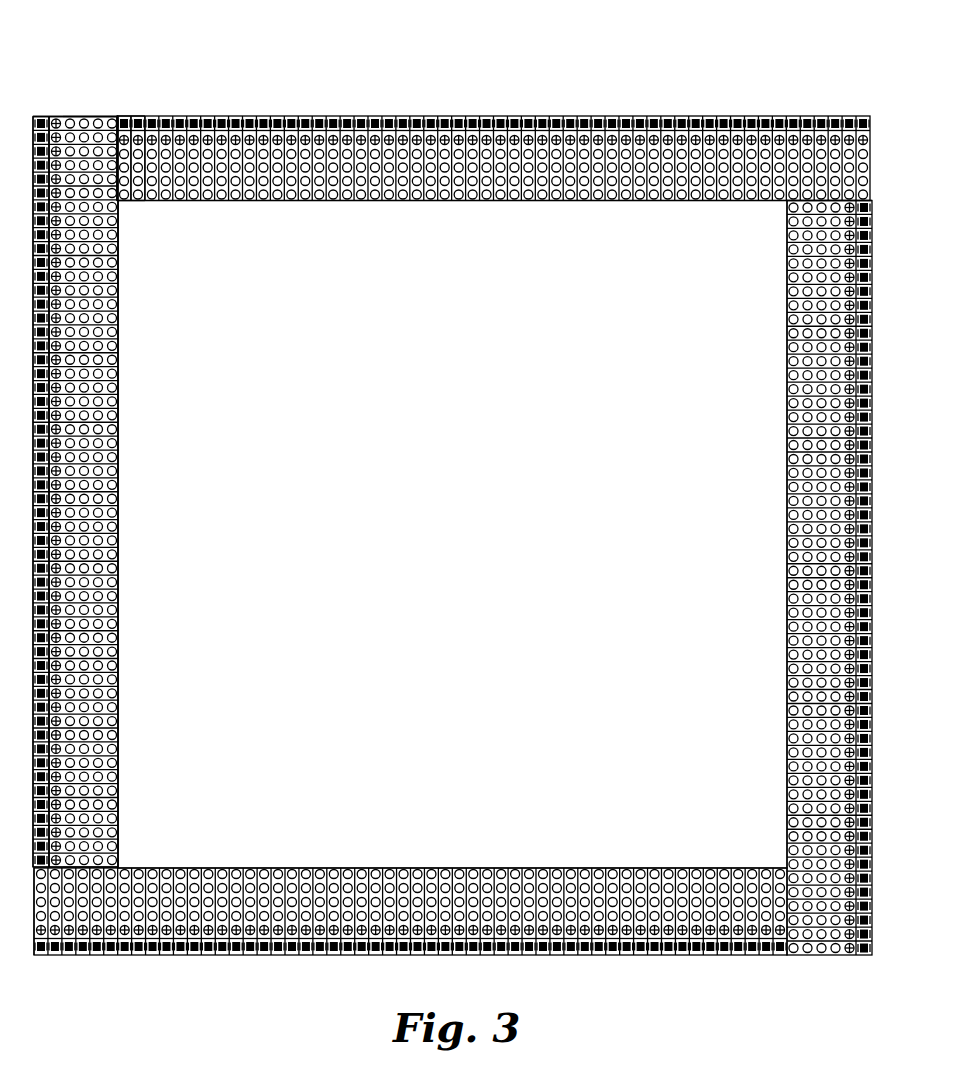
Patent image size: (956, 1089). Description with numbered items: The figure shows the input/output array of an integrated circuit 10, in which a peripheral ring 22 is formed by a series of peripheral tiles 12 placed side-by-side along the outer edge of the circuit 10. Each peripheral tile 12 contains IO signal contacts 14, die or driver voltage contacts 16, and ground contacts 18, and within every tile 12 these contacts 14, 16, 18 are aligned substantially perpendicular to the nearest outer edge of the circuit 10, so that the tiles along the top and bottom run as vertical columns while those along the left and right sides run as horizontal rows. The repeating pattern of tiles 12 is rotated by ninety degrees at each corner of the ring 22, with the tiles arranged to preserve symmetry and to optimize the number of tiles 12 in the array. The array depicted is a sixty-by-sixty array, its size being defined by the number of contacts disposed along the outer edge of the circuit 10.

The integrated circuit 10 is at (442, 525).
The peripheral tile 12 is at (126, 104).
The IO signal contacts 14 is at (77, 104).
The die voltage contacts 16 is at (43, 104).
The ground contacts 18 is at (59, 104).
The peripheral ring 22 is at (797, 64).